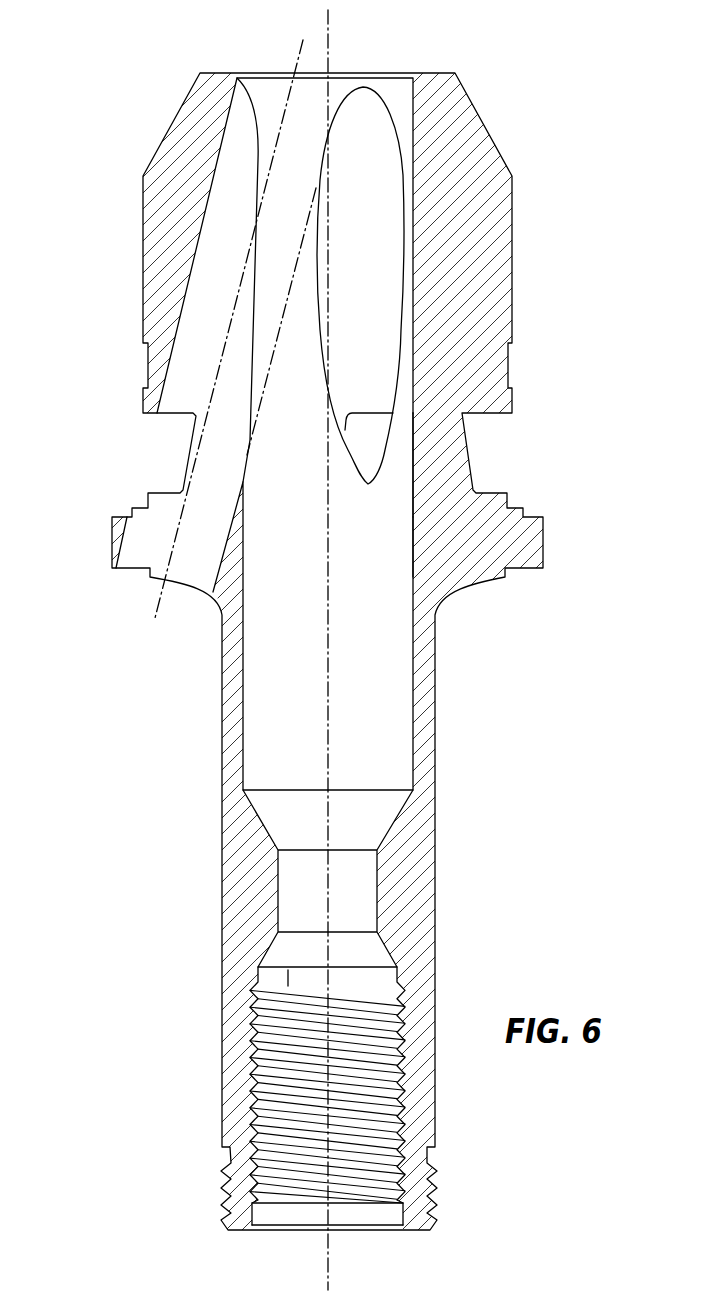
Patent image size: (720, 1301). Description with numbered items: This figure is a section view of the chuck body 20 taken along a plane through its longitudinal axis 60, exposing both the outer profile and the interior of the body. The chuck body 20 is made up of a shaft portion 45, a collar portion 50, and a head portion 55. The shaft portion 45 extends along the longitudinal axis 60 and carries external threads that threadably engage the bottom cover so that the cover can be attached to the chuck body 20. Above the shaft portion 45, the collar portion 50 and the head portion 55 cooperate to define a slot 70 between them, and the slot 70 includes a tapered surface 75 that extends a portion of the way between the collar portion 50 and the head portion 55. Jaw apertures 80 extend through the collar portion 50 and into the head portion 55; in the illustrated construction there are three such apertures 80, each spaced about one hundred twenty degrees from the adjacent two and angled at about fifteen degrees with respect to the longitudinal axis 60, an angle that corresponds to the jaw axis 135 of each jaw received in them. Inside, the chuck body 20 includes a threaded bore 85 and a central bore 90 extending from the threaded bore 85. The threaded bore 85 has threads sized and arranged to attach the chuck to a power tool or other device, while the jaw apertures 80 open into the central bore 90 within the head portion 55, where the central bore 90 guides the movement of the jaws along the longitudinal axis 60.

The chuck body 20 is at (553, 103).
The shaft portion 45 is at (423, 848).
The collar portion 50 is at (533, 543).
The head portion 55 is at (513, 278).
The longitudinal axis 60 is at (332, 665).
The slot 70 is at (120, 473).
The tapered surface 75 is at (467, 453).
The jaw apertures 80 is at (244, 138).
The threaded bore 85 is at (278, 1080).
The central bore 90 is at (243, 697).
The jaw axis 135 is at (223, 342).